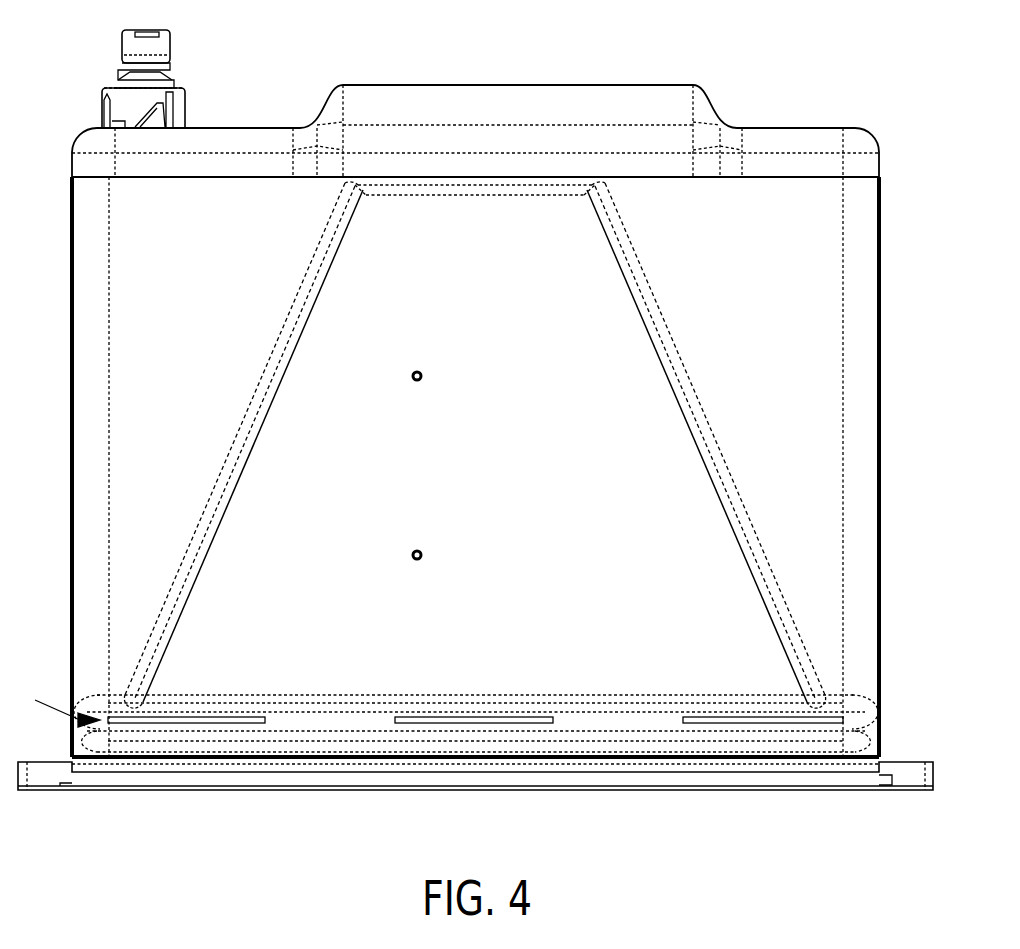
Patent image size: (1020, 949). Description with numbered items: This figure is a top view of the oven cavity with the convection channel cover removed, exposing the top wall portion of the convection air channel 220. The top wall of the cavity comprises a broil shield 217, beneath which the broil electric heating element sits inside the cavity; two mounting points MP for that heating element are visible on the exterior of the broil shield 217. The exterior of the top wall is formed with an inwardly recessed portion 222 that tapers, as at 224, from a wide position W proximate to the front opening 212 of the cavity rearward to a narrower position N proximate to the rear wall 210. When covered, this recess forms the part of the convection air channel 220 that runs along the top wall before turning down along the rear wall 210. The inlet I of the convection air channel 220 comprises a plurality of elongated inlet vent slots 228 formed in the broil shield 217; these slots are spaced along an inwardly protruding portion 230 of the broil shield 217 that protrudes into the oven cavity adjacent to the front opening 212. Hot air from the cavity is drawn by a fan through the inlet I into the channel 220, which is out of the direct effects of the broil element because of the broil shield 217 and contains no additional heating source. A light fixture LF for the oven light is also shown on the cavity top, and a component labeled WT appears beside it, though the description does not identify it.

The rear wall 210 is at (487, 107).
The front opening 212 is at (293, 773).
The broil shield 217 is at (818, 340).
The convection air channel 220 is at (474, 445).
The inwardly recessed portion 222 is at (464, 754).
The taper 224 is at (245, 463).
The elongated inlet vent slots 228 is at (218, 717).
The inwardly protruding portion 230 is at (577, 723).
The light fixture LF is at (155, 50).
The water tank WT is at (170, 107).
The mounting points MP is at (421, 555).
The narrower position N is at (493, 195).
The wide position W is at (383, 678).
The inlet I is at (62, 703).